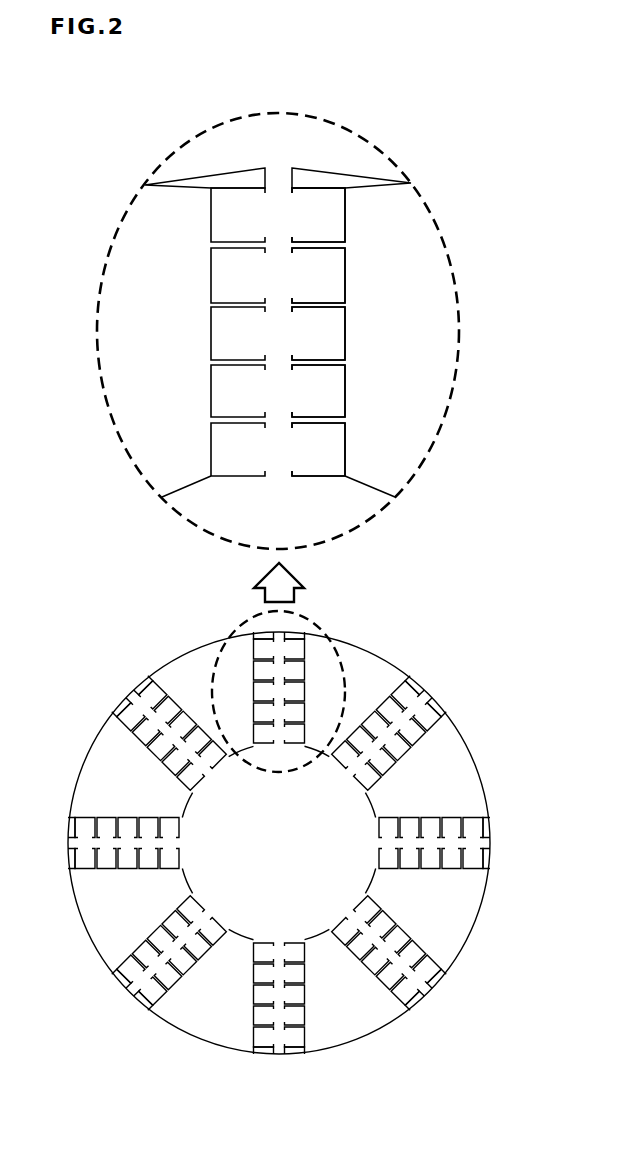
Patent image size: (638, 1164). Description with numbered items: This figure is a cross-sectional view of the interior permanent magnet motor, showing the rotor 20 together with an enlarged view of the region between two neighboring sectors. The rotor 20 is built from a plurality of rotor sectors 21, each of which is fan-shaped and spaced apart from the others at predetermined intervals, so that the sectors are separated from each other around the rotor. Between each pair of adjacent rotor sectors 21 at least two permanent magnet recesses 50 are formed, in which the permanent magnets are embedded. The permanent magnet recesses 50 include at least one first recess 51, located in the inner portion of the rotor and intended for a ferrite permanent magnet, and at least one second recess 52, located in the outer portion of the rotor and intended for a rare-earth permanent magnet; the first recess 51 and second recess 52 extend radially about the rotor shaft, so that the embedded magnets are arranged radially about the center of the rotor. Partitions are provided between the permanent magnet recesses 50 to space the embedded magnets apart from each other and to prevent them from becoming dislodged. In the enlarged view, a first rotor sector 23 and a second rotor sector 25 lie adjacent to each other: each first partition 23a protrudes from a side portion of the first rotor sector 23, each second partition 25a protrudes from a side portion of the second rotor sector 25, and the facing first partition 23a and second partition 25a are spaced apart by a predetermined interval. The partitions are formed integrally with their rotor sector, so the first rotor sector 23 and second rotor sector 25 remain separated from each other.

The rotor 20 is at (314, 815).
The rotor sector 21 is at (467, 792).
The first rotor sector 23 is at (178, 187).
The second rotor sector 25 is at (387, 187).
The first partition 23a is at (240, 242).
The second partition 25a is at (325, 240).
The permanent magnet recess 50 is at (297, 640).
The first recess 51 is at (344, 332).
The second recess 52 is at (344, 211).